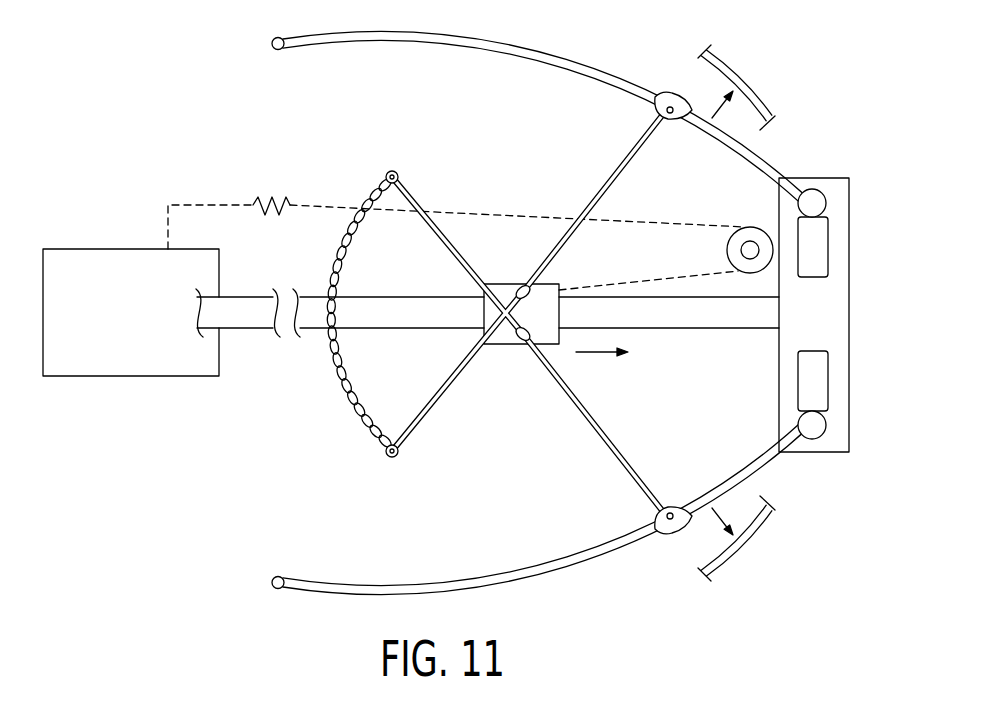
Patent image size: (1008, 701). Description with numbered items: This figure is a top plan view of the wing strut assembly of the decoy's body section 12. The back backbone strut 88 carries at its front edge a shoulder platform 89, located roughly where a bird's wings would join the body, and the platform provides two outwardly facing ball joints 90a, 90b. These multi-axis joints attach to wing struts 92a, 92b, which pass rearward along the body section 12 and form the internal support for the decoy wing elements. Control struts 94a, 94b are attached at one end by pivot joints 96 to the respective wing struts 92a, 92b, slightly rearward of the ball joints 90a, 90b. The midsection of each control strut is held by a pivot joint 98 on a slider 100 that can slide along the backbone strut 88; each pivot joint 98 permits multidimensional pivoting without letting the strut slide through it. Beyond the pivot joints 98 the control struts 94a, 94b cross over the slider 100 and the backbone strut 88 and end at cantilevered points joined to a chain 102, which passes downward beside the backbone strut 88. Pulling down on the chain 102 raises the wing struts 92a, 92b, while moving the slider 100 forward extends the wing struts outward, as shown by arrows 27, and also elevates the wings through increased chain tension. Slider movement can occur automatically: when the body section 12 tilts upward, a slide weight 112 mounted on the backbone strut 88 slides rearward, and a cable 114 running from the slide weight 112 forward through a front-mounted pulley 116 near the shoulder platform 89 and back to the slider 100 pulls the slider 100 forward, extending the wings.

The body section 12 is at (263, 452).
The arrows 27 is at (720, 100).
The backbone strut 88 is at (730, 318).
The shoulder platform 89 is at (839, 317).
The ball joint 90a is at (822, 190).
The ball joint 90b is at (828, 430).
The wing strut 92a is at (474, 40).
The wing strut 92b is at (570, 563).
The control strut 94a is at (594, 197).
The control strut 94b is at (596, 431).
The pivot joint 96 is at (655, 113).
The pivot joint 98 is at (519, 288).
The slider 100 is at (492, 346).
The chain 102 is at (333, 271).
The slide weight 112 is at (122, 357).
The cable 114 is at (205, 205).
The pulley 116 is at (752, 228).